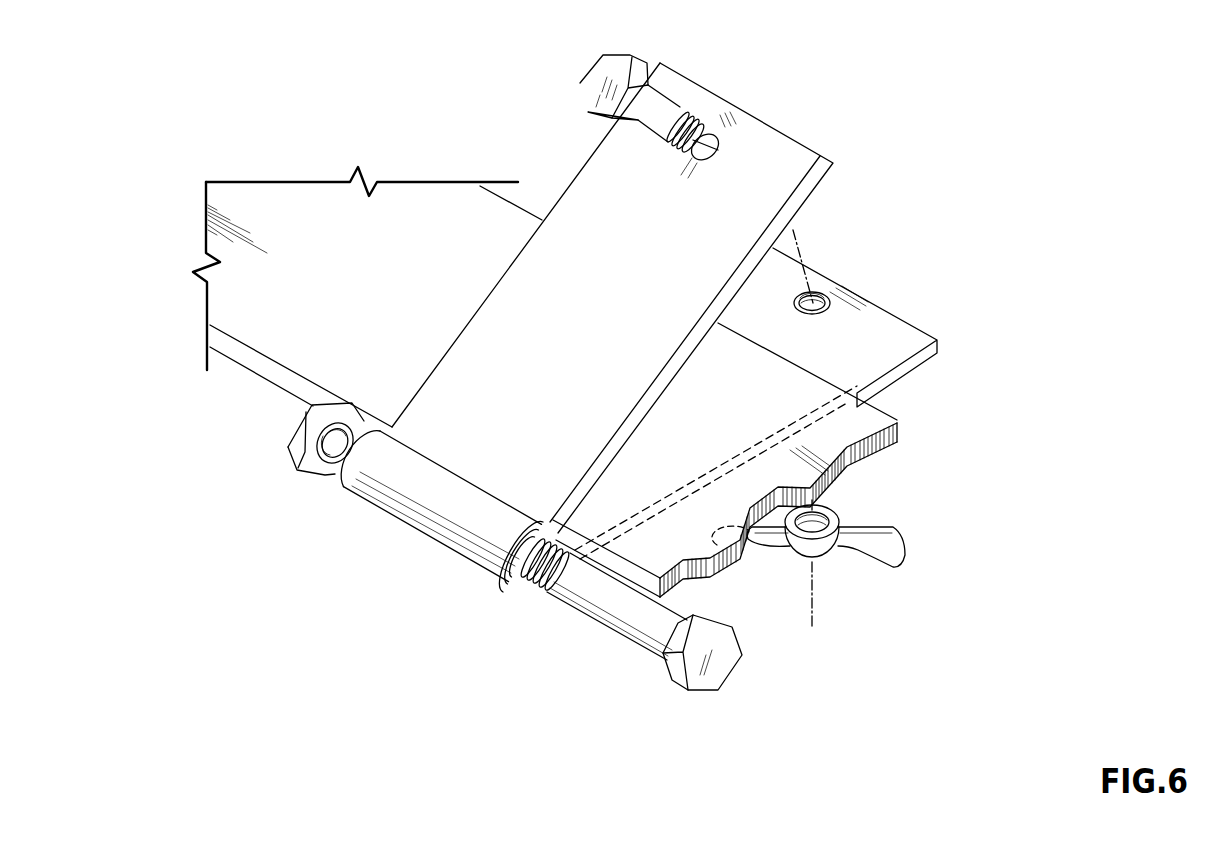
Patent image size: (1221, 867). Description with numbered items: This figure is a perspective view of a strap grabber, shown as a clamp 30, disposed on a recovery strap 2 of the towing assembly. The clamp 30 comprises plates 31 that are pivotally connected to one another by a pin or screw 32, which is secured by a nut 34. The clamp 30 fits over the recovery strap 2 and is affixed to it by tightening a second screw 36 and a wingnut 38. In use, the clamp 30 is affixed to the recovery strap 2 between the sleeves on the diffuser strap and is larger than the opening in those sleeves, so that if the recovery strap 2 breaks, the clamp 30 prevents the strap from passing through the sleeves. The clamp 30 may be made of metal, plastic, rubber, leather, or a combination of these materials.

The recovery strap 2 is at (435, 213).
The clamp 30 is at (938, 108).
The plates 31 is at (778, 195).
The pin or screw 32 is at (650, 647).
The nut 34 is at (298, 432).
The second screw 36 is at (662, 108).
The wingnut 38 is at (897, 540).